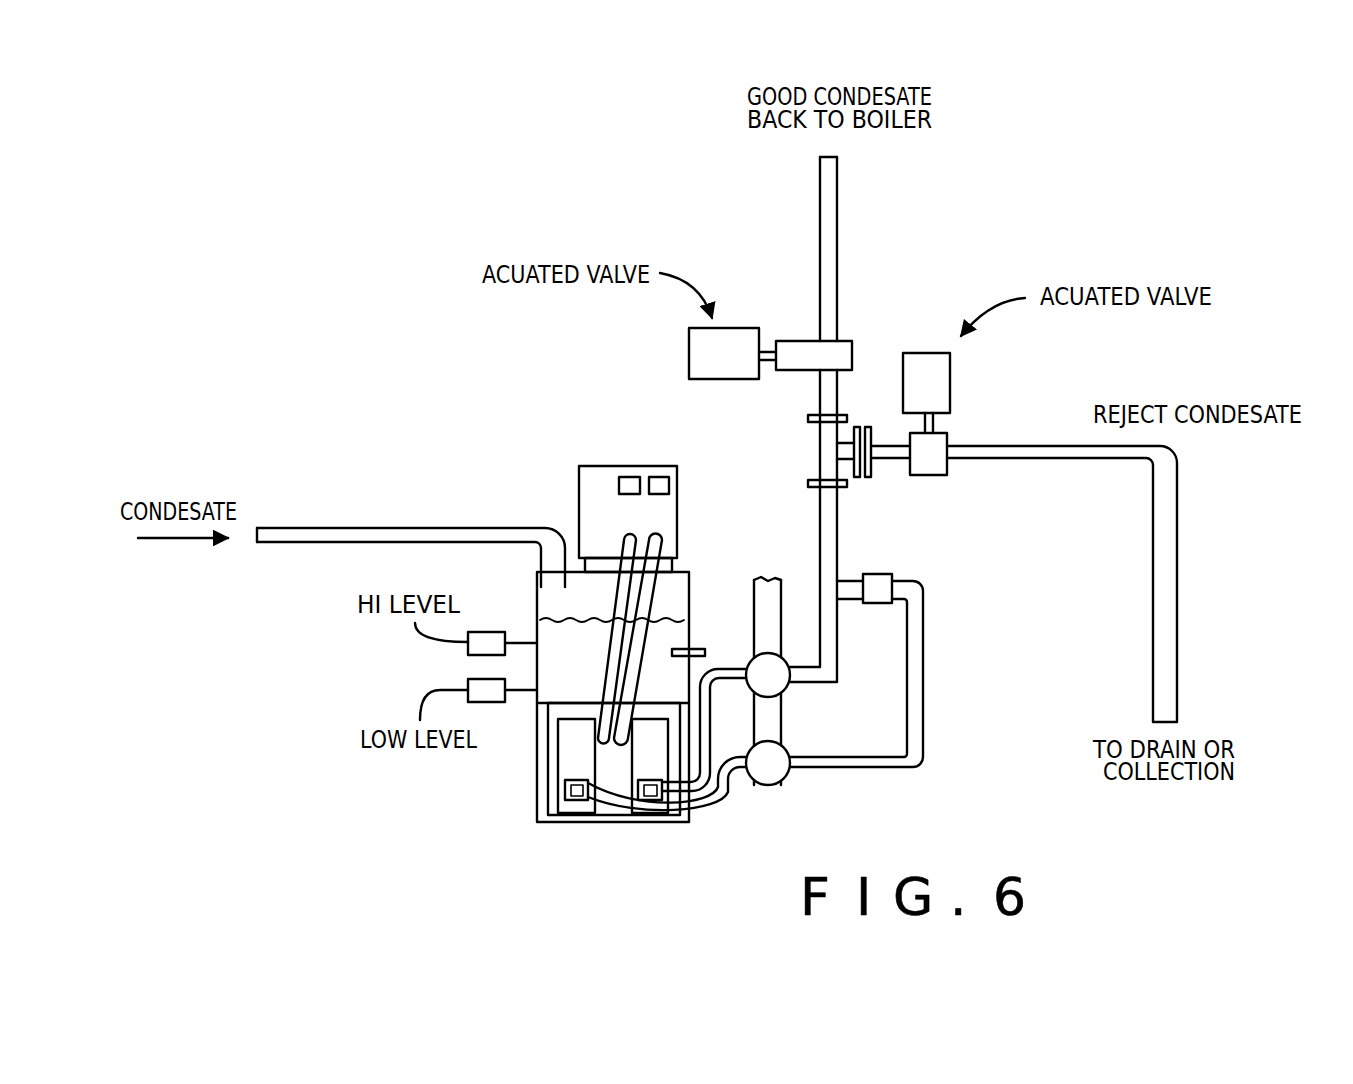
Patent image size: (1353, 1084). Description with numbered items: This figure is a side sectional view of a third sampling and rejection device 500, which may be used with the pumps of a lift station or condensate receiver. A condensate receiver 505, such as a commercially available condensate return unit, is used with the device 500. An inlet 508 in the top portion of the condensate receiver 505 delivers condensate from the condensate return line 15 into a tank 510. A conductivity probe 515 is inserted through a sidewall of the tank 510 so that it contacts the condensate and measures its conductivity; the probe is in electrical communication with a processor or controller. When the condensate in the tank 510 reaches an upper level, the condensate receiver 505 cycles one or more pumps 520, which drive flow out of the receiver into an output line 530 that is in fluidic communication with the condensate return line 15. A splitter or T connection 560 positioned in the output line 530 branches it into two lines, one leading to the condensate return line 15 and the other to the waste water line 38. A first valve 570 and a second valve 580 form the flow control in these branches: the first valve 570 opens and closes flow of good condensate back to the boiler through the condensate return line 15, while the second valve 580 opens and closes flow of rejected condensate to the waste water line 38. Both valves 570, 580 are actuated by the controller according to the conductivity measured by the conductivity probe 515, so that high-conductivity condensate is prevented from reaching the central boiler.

The condensate return line 15 is at (405, 527).
The waste water line 38 is at (1177, 597).
The third sampling and rejection device 500 is at (903, 486).
The condensate receiver 505 is at (333, 641).
The inlet 508 is at (572, 572).
The tank 510 is at (595, 600).
The conductivity probe 515 is at (705, 650).
The pumps 520 is at (787, 685).
The output line 530 is at (837, 543).
The T connection 560 is at (815, 450).
The first valve 570 is at (852, 348).
The second valve 580 is at (937, 442).